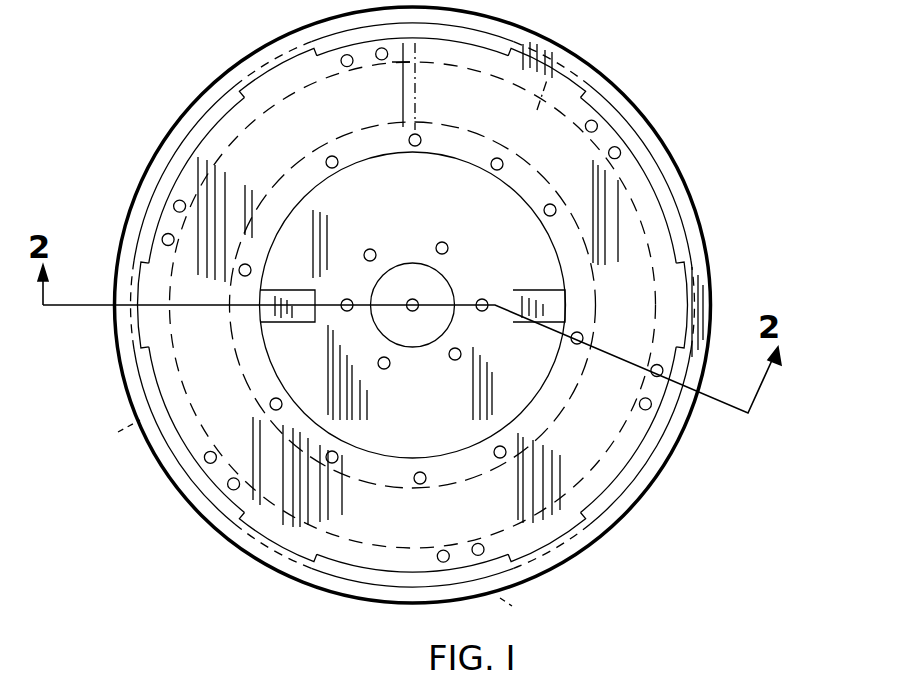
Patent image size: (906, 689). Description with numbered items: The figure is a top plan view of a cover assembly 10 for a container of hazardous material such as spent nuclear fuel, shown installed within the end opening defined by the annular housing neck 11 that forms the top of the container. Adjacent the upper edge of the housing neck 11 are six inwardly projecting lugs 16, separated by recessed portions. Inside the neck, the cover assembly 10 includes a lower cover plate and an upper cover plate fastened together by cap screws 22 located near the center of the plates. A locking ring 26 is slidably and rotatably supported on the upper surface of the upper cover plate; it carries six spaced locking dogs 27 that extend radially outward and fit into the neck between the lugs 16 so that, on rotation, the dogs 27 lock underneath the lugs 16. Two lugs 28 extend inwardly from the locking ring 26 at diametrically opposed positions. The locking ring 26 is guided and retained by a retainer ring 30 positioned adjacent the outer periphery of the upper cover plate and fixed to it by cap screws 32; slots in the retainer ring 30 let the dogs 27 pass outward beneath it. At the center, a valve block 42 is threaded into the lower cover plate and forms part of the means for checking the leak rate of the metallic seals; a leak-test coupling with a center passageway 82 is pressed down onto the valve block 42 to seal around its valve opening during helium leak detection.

The cover assembly 10 is at (183, 400).
The housing neck 11 is at (263, 567).
The lugs 16 is at (243, 83).
The cap screws 22 is at (449, 247).
The locking ring 26 is at (637, 218).
The locking dogs 27 is at (301, 522).
The lugs 28 is at (282, 318).
The retainer ring 30 is at (613, 477).
The cap screws 32 is at (338, 163).
The valve block 42 is at (432, 292).
The center passageway 82 is at (413, 312).